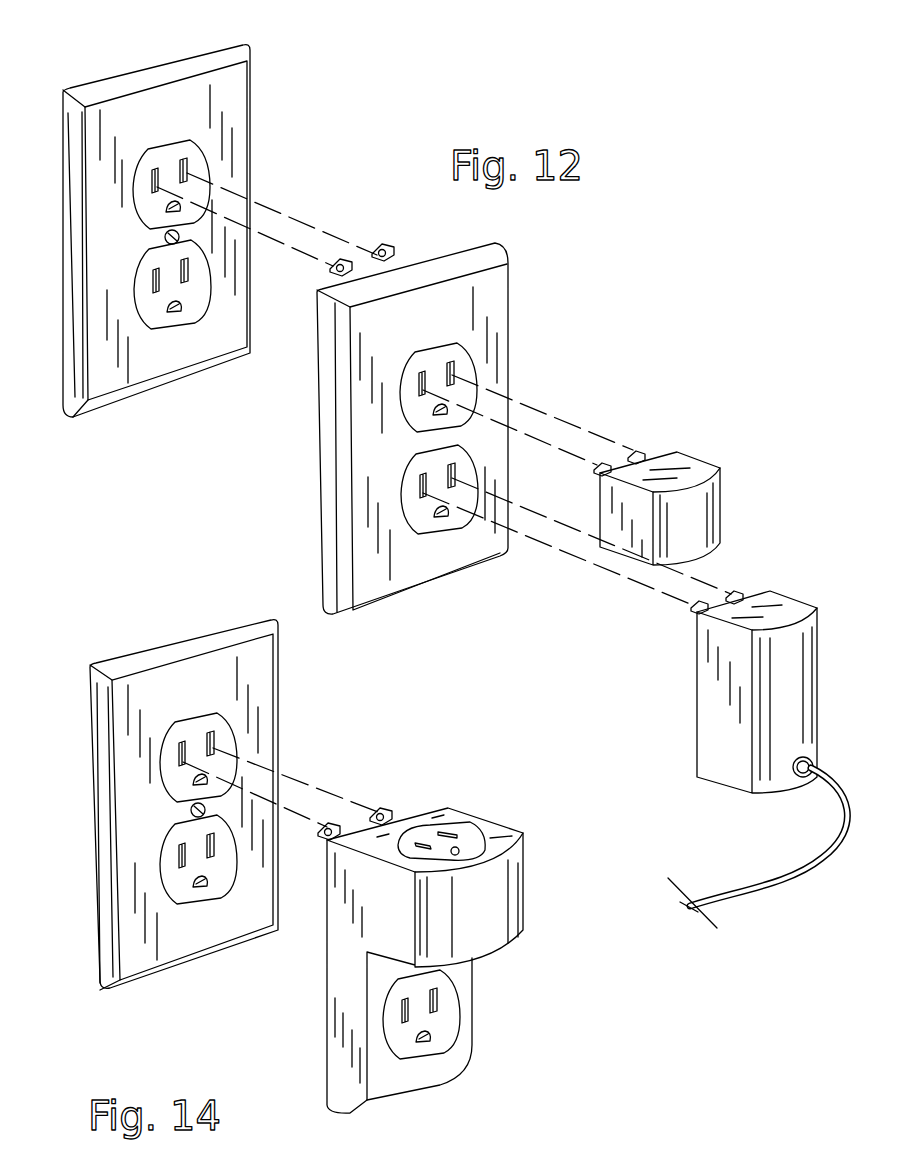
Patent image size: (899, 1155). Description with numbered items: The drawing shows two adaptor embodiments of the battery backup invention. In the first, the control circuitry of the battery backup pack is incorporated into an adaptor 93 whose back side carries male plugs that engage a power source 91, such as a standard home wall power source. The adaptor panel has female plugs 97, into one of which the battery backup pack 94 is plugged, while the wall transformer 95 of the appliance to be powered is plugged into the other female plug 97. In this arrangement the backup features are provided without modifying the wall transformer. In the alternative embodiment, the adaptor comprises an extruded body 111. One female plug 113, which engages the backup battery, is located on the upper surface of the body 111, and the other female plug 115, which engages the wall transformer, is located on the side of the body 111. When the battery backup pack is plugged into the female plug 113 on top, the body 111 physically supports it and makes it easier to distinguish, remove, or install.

In FIG. 12, the power source 91 is at (137, 77).
In FIG. 12, the adaptor 93 is at (502, 333).
In FIG. 12, the battery backup pack 94 is at (683, 452).
In FIG. 12, the wall transformer 95 is at (697, 753).
In FIG. 12, the female plugs 97 is at (407, 490).
In FIG. 14, the extruded body 111 is at (523, 910).
In FIG. 14, the female plug 113 is at (443, 832).
In FIG. 14, the front receptacle of adapter 115 is at (433, 1025).